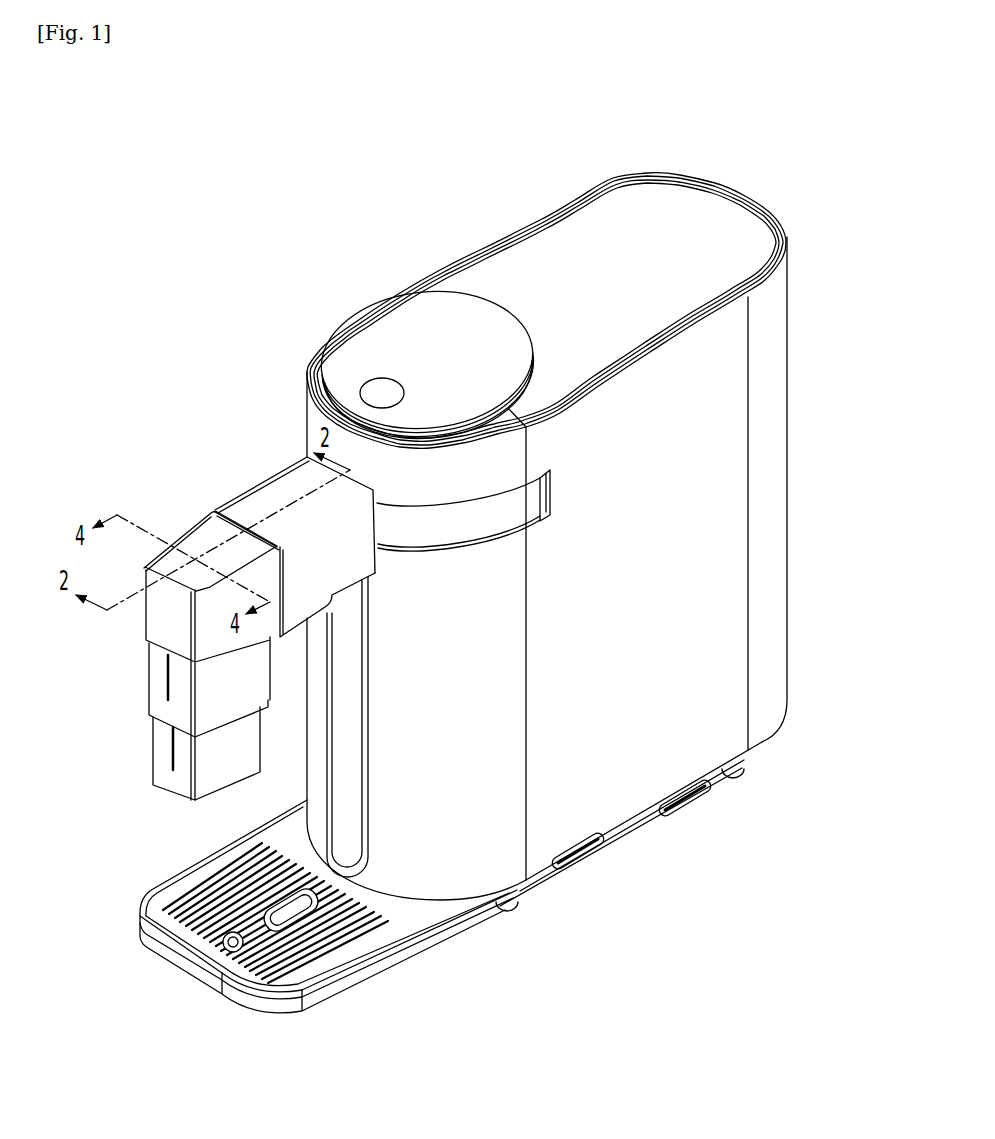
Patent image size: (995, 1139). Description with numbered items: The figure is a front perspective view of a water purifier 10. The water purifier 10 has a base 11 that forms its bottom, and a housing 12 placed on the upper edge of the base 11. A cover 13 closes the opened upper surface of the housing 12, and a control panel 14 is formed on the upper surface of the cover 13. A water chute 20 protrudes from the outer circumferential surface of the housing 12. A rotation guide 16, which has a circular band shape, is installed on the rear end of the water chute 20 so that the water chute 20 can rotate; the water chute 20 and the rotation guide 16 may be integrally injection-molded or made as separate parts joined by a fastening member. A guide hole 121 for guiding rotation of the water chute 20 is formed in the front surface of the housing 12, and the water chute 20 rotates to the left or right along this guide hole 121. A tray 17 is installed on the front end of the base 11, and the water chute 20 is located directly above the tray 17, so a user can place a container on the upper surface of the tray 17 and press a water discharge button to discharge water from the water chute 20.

The water purifier 10 is at (700, 146).
The base 11 is at (727, 769).
The housing 12 is at (770, 384).
The cover 13 is at (745, 227).
The control panel 14 is at (375, 337).
The rotation guide 16 is at (510, 520).
The guide hole 121 is at (547, 492).
The tray 17 is at (157, 902).
The water chute 20 is at (207, 492).